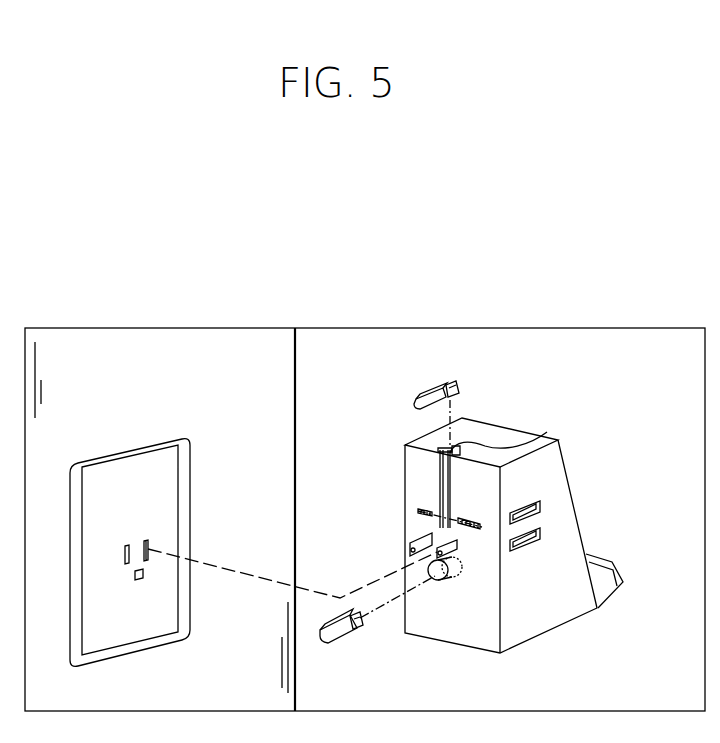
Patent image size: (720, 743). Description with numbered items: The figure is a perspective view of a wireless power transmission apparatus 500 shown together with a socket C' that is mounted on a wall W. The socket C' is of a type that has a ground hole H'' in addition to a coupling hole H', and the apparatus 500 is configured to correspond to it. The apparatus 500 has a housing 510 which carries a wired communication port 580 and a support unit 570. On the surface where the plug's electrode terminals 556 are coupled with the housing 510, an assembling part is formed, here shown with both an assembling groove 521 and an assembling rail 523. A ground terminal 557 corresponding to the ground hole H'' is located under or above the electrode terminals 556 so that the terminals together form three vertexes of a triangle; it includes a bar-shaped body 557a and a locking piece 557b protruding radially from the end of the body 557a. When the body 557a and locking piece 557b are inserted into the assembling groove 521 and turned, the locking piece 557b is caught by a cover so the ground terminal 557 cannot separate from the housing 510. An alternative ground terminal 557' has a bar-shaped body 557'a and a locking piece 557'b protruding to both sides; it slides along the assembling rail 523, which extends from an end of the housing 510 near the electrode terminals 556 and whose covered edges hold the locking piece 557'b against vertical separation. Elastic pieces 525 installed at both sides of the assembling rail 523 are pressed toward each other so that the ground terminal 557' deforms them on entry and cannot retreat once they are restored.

The wireless power transmission apparatus 500 is at (491, 521).
The housing 510 is at (493, 433).
The assembling groove 521 is at (440, 580).
The assembling rail 523 is at (547, 432).
The elastic piece 525 is at (418, 510).
The electrode terminal 556 is at (410, 546).
The ground terminal 557 is at (377, 637).
The body 557a is at (337, 634).
The locking piece 557b is at (337, 643).
The ground terminal 557' is at (434, 397).
The body 557'a is at (410, 410).
The locking piece 557'b is at (478, 381).
The support unit 570 is at (612, 566).
The wired communication port 580 is at (540, 502).
The wall W is at (262, 398).
The coupling hole H' is at (86, 590).
The ground hole H'' is at (179, 570).
The socket C' is at (130, 567).